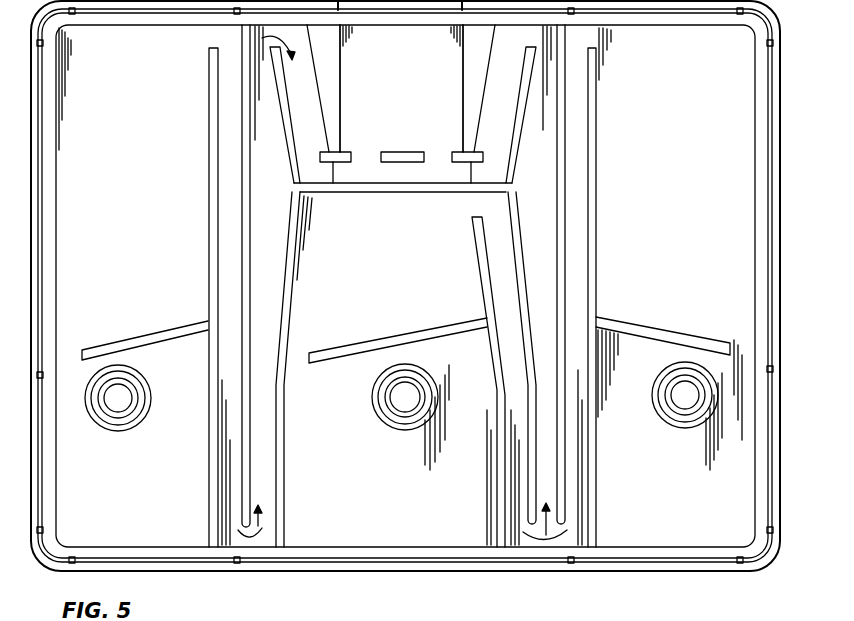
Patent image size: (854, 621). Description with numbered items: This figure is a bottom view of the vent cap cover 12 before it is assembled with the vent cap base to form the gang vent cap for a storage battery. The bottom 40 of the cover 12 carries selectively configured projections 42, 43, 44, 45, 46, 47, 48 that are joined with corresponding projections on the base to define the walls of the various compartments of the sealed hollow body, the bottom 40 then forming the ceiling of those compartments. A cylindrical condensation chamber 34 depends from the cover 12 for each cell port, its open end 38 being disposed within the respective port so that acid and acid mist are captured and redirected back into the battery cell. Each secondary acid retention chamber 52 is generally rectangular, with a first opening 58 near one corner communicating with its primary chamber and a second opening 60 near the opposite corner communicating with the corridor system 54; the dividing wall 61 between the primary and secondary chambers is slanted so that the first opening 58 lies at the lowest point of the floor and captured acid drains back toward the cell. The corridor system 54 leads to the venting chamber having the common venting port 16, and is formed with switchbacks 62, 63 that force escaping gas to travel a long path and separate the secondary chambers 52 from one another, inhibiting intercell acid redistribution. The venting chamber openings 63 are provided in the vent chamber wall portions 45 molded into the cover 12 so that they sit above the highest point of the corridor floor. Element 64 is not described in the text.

The cover 12 is at (690, 572).
The venting port 16 is at (416, 2).
The cylindrical condensation chamber 34 is at (392, 428).
The open end 38 is at (374, 397).
The bottom 40 is at (142, 206).
The projection 42 is at (212, 383).
The projection 43 is at (248, 278).
The projection 44 is at (380, 186).
The vent chamber wall portion 45 is at (342, 90).
The projection 46 is at (558, 185).
The projection 47 is at (597, 235).
The projection 48 is at (120, 18).
The secondary acid retention chamber 52 is at (685, 126).
The corridor system 54 is at (236, 455).
The first opening 58 is at (746, 352).
The second opening 60 is at (208, 45).
The dividing wall 61 is at (150, 332).
The switchback 62 is at (256, 541).
The switchback 63 is at (292, 35).
The bar 64 is at (436, 157).